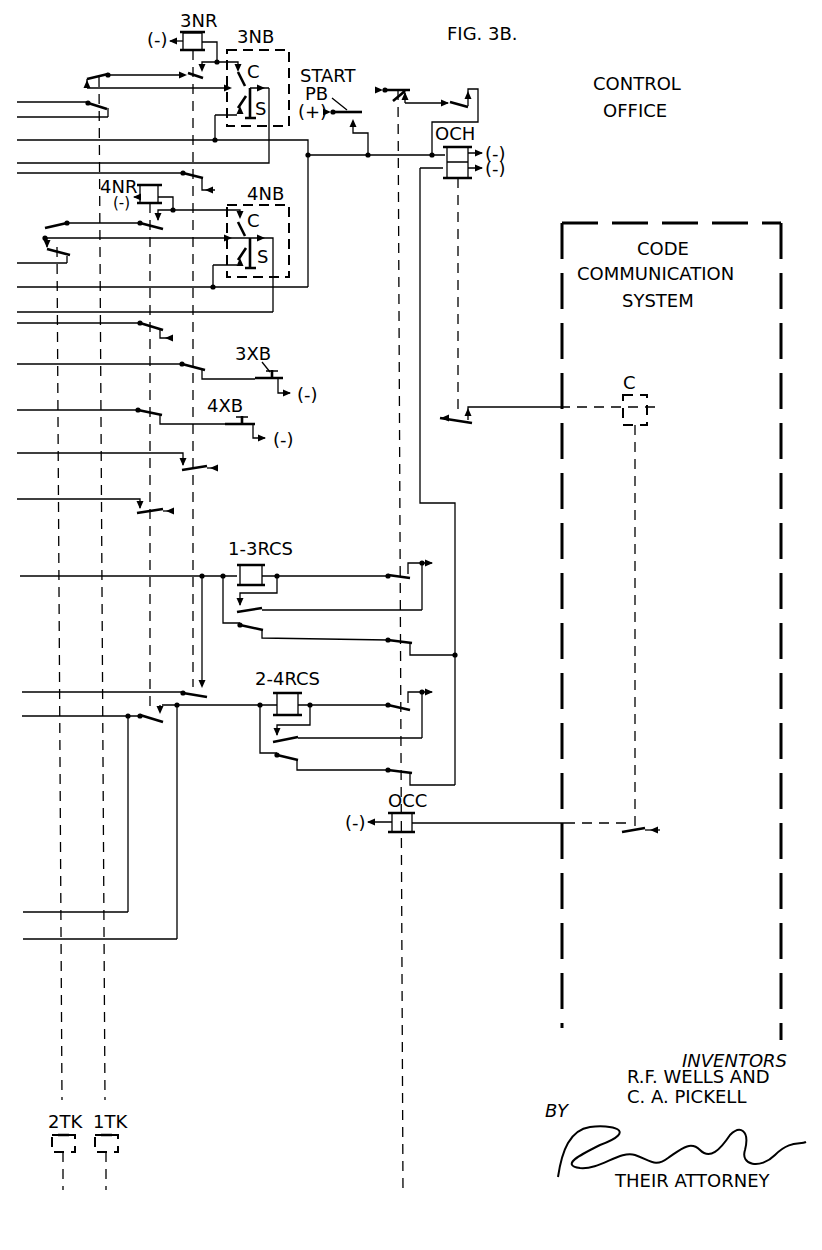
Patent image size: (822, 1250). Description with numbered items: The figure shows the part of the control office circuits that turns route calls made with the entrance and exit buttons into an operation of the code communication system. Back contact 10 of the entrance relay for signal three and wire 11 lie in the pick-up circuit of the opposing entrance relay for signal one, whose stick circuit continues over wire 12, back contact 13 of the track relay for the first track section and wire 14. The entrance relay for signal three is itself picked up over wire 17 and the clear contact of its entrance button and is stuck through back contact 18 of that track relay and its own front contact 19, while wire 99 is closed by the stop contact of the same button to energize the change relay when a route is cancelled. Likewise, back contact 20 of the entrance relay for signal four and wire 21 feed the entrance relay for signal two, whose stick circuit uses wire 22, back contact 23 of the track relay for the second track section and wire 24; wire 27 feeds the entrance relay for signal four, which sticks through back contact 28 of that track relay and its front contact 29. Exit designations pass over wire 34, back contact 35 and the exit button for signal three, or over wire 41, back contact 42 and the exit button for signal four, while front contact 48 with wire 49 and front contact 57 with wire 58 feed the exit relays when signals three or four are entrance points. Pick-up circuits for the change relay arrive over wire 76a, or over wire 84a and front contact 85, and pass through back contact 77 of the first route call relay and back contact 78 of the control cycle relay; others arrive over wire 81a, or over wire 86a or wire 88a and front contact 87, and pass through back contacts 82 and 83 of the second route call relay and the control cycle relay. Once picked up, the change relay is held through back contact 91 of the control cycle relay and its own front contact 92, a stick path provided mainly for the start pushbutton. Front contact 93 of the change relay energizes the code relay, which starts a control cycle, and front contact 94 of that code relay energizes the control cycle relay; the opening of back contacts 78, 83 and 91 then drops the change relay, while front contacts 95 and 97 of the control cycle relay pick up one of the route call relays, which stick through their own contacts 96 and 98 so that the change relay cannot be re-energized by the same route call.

The back contact of relay 3NR 10 is at (203, 173).
The wire 11 is at (17, 173).
The wire 12 is at (17, 117).
The back contact of relay 1TK 13 is at (87, 104).
The wire 14 is at (19, 102).
The wire 17 is at (17, 140).
The back contact of relay 1TK 18 is at (95, 69).
The front contact of relay 3NR 19 is at (188, 73).
The back contact of relay 4NR 20 is at (148, 324).
The wire 21 is at (17, 323).
The wire 22 is at (17, 263).
The back contact of relay 2TK 23 is at (72, 252).
The wire 24 is at (146, 270).
The wire 27 is at (45, 311).
The back contact of relay 2TK 28 is at (58, 219).
The front contact of relay 4NR 29 is at (167, 226).
The wire 34 is at (17, 364).
The back contact of relay 3NR 35 is at (188, 370).
The wire 41 is at (17, 410).
The back contact of relay 4NR 42 is at (148, 415).
The front contact of relay 3NR 48 is at (200, 470).
The wire 49 is at (17, 453).
The front contact of relay 4NR 57 is at (167, 520).
The wire 58 is at (18, 499).
The wire 76a is at (22, 576).
The back contact of relay 1-3RCS 77 is at (305, 613).
The back contact of relay OCC 78 is at (392, 643).
The wire 81a is at (25, 939).
The back contact of relay 2-4RCS 82 is at (324, 743).
The back contact of relay OCC 83 is at (390, 775).
The wire 84a is at (50, 692).
The front contact of relay 3NR 85 is at (192, 686).
The wire 86a is at (22, 716).
The front contact of relay 4NR 87 is at (150, 726).
The wire 88a is at (23, 912).
The back contact of relay OCC 91 is at (382, 98).
The front contact of relay OCH 92 is at (458, 100).
The front contact of relay OCH 93 is at (458, 425).
The front contact of relay C 94 is at (636, 838).
The front contact of relay OCC 95 is at (390, 580).
The front contact of relay 1-3RCS 96 is at (263, 612).
The front contact of relay OCC 97 is at (395, 710).
The stick contact of relay 2-4RCS 98 is at (298, 742).
The wire 99 is at (80, 140).